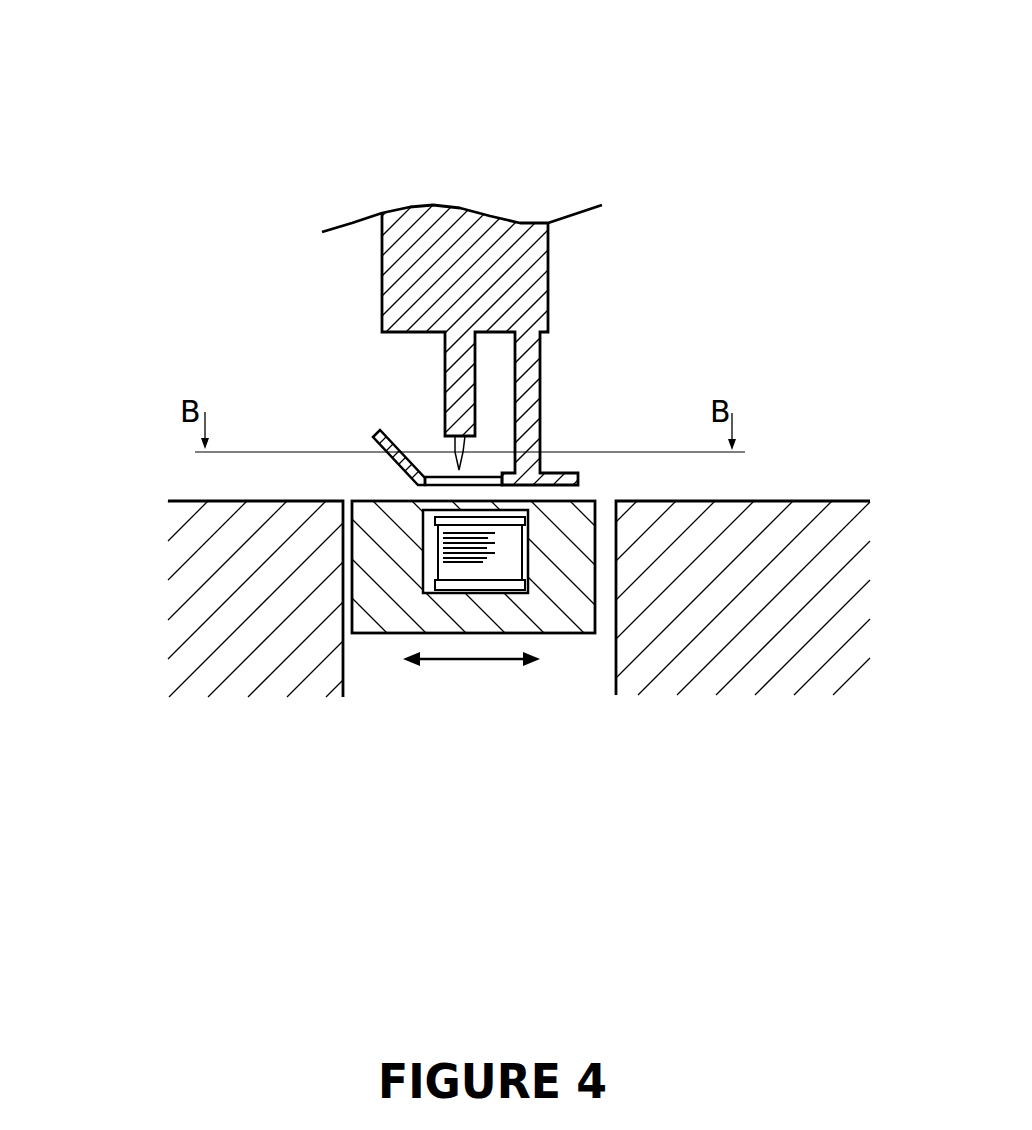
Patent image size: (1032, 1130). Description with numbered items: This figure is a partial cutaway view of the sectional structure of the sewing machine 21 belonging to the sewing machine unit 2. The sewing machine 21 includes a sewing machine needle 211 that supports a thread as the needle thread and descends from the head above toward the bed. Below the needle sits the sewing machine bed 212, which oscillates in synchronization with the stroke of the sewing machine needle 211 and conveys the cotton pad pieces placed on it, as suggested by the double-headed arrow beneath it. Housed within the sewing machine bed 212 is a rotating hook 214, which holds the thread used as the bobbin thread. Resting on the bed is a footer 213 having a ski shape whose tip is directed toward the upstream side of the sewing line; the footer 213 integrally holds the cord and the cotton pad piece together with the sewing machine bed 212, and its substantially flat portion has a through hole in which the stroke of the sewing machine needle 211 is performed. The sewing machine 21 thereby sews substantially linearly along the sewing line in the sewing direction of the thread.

The sewing machine unit 2 is at (142, 715).
The sewing machine 21 is at (518, 192).
The sewing machine needle 211 is at (462, 453).
The sewing machine bed 212 is at (368, 500).
The footer 213 is at (397, 440).
The rotating hook 214 is at (485, 560).